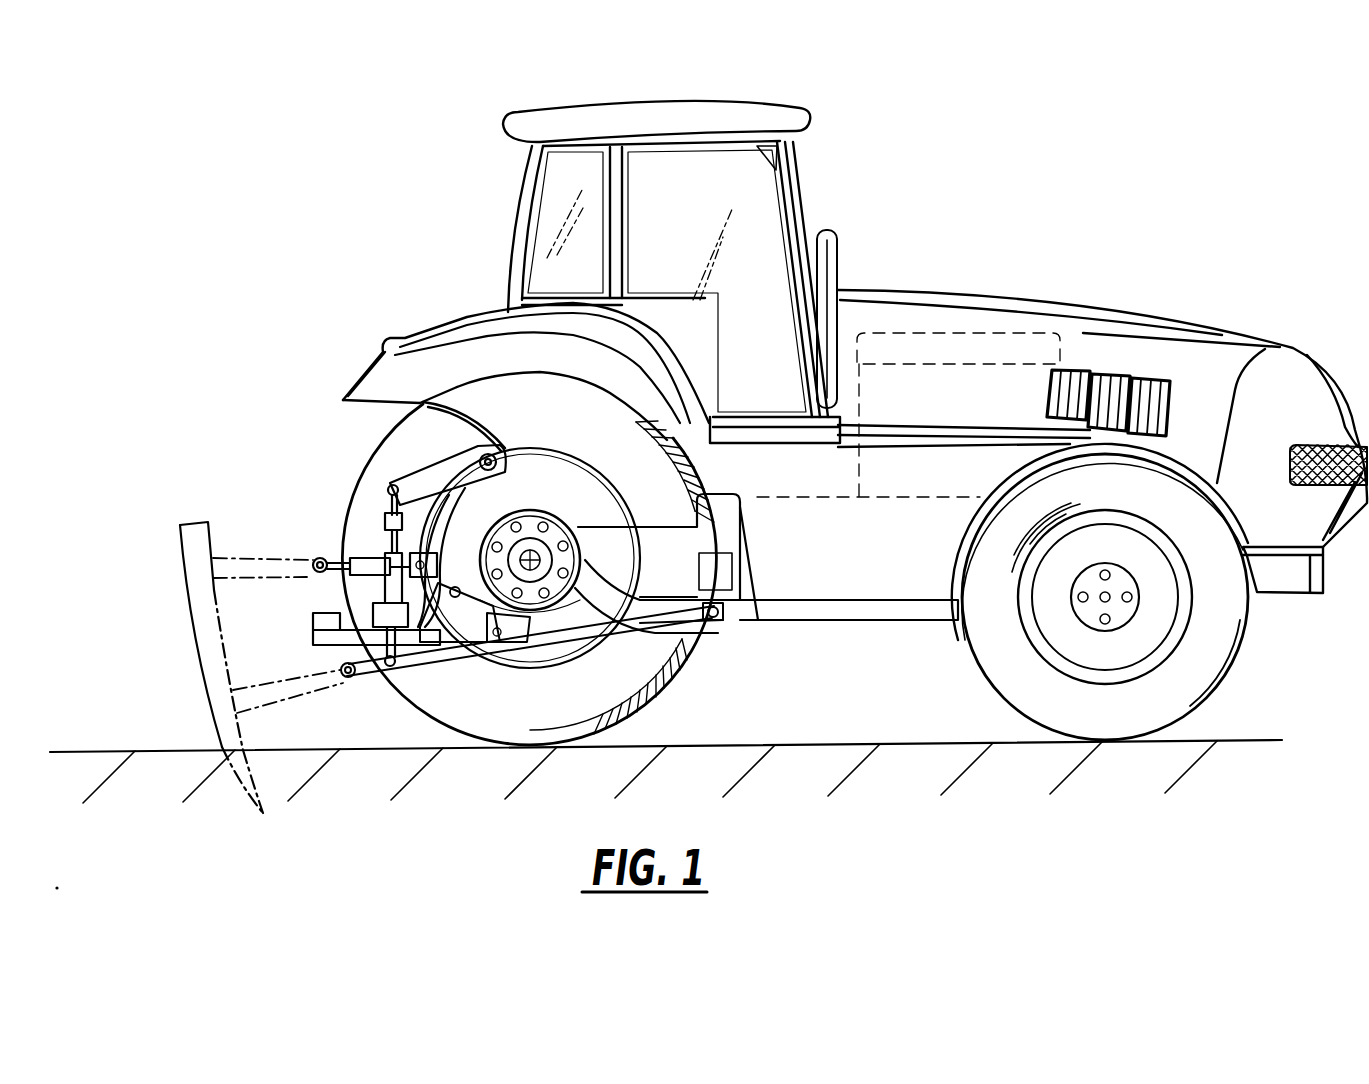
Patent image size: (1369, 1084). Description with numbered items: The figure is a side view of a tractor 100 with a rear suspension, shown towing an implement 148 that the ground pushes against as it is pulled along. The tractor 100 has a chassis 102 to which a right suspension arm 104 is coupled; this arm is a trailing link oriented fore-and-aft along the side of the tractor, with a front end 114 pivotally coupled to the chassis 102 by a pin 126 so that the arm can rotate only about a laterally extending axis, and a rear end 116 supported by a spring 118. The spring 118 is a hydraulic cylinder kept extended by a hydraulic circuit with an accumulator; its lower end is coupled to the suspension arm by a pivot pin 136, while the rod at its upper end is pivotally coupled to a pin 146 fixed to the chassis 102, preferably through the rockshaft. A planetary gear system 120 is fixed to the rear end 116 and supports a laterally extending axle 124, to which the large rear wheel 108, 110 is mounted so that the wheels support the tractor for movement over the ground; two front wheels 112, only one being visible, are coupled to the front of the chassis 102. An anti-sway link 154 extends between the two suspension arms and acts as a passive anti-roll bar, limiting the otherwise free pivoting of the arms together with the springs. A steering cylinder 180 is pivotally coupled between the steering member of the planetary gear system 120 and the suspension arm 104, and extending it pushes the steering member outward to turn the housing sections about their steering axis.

The tractor 100 is at (918, 217).
The chassis 102 is at (747, 587).
The right suspension arm 104 is at (585, 615).
The rear wheel 108 is at (498, 390).
The rear wheel 110 is at (492, 725).
The front wheel 112 is at (1237, 658).
The front end 114 is at (680, 617).
The rear end 116 is at (457, 600).
The spring 118 is at (455, 565).
The planetary gear system 120 is at (527, 608).
The axle 124 is at (590, 530).
The pin 126 is at (725, 625).
The pivot pin 136 is at (455, 597).
The pin 146 is at (455, 455).
The implement 148 is at (184, 625).
The anti-sway link 154 is at (677, 655).
The steering cylinder 180 is at (583, 557).